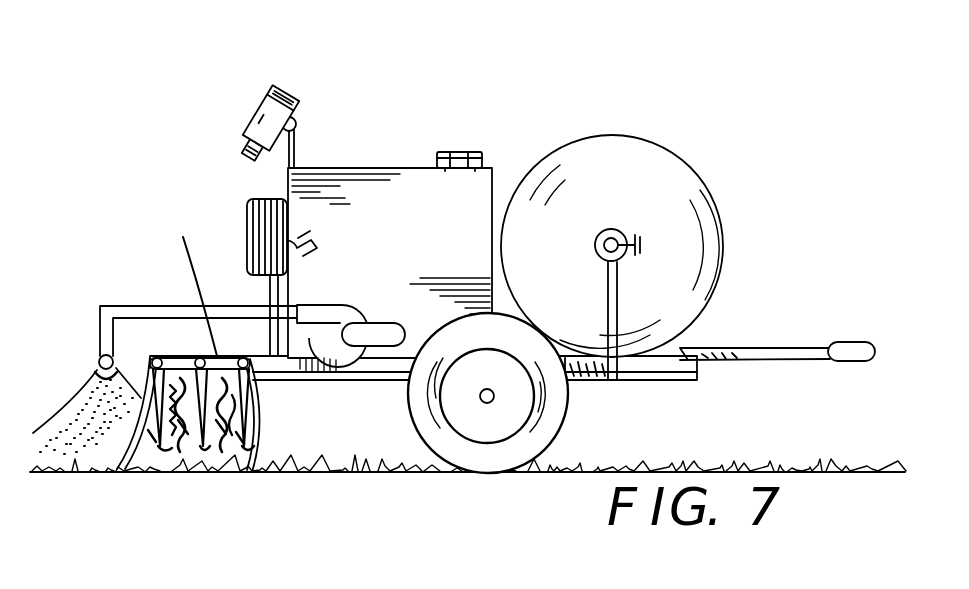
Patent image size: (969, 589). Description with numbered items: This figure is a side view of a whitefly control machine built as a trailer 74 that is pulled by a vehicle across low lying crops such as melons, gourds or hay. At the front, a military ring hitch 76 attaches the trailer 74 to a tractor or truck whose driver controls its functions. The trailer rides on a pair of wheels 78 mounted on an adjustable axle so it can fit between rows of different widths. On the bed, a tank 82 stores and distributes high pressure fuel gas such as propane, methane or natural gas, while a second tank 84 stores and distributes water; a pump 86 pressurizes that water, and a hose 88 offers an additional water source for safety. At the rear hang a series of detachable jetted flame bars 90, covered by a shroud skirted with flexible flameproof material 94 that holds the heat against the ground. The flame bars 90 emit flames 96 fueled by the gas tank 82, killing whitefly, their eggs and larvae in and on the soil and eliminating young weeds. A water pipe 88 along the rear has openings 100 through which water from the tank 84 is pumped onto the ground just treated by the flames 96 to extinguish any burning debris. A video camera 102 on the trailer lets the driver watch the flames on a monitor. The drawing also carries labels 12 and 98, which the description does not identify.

The tool holder bracket 12 is at (178, 360).
The trailer 74 is at (525, 168).
The military ring hitch 76 is at (845, 345).
The wheels 78 is at (455, 440).
The tank 82 is at (672, 190).
The tank 84 is at (338, 167).
The pump 86 is at (350, 335).
The hose 88 is at (247, 235).
The jetted flame bars 90 is at (184, 283).
The flexible flameproof material 94 is at (225, 460).
The flames 96 is at (178, 458).
The spray pipe 98 is at (100, 314).
The openings 100 is at (87, 386).
The video camera 102 is at (265, 108).